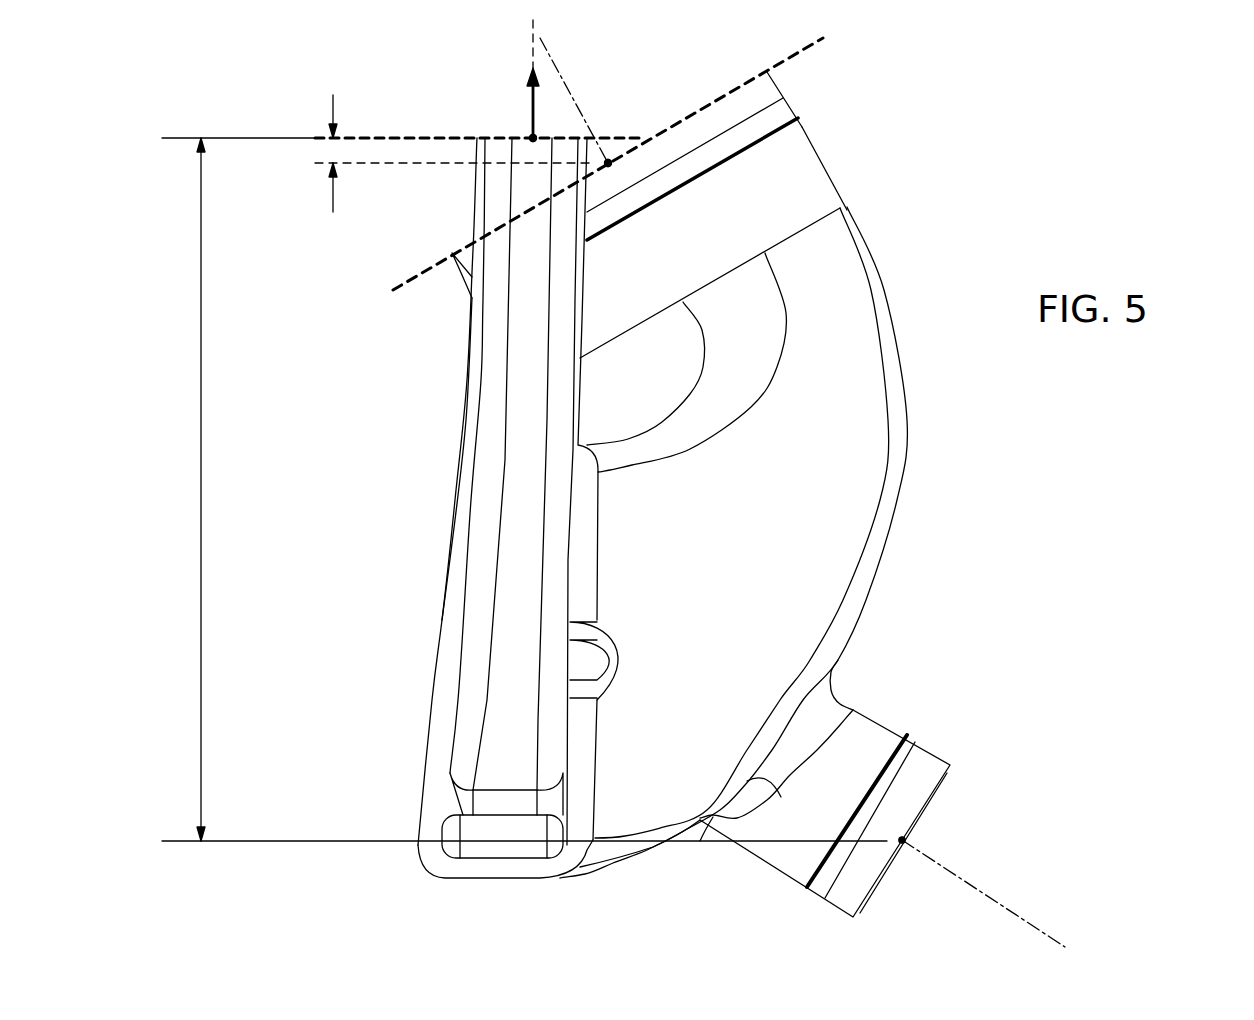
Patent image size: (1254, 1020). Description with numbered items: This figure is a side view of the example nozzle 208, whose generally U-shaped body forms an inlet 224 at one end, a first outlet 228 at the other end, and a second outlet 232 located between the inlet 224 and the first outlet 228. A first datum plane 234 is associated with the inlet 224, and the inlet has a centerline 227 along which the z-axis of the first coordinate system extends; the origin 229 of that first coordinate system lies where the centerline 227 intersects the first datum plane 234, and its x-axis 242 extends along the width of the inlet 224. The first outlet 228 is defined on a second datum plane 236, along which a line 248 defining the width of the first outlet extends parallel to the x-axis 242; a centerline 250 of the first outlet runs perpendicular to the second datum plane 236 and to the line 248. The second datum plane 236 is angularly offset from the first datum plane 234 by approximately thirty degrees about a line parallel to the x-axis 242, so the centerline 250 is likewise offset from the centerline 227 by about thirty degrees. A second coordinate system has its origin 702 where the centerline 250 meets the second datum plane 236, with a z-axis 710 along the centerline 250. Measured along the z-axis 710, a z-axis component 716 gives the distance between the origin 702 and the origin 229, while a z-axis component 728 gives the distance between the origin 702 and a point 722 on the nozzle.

The nozzle 208 is at (903, 445).
The inlet 224 is at (681, 121).
The centerline of the inlet 227 is at (578, 100).
The first outlet 228 is at (495, 138).
The origin 229 is at (608, 163).
The second outlet 232 is at (948, 777).
The first datum plane 234 is at (803, 52).
The second datum plane 236 is at (319, 136).
The x-axis 242 is at (608, 163).
The line 248 is at (533, 138).
The centerline of the first outlet 250 is at (528, 38).
The origin 702 is at (533, 138).
The z-axis 710 is at (536, 100).
The z-axis component 716 is at (333, 200).
The point 722 is at (903, 845).
The z-axis component 728 is at (201, 510).